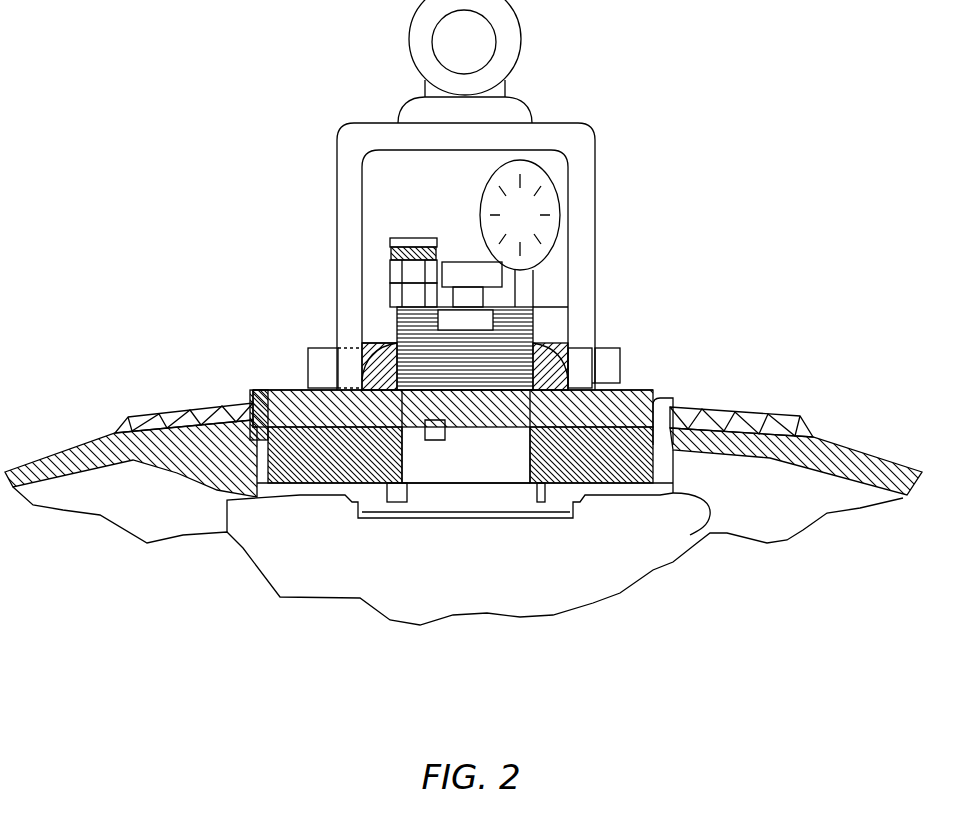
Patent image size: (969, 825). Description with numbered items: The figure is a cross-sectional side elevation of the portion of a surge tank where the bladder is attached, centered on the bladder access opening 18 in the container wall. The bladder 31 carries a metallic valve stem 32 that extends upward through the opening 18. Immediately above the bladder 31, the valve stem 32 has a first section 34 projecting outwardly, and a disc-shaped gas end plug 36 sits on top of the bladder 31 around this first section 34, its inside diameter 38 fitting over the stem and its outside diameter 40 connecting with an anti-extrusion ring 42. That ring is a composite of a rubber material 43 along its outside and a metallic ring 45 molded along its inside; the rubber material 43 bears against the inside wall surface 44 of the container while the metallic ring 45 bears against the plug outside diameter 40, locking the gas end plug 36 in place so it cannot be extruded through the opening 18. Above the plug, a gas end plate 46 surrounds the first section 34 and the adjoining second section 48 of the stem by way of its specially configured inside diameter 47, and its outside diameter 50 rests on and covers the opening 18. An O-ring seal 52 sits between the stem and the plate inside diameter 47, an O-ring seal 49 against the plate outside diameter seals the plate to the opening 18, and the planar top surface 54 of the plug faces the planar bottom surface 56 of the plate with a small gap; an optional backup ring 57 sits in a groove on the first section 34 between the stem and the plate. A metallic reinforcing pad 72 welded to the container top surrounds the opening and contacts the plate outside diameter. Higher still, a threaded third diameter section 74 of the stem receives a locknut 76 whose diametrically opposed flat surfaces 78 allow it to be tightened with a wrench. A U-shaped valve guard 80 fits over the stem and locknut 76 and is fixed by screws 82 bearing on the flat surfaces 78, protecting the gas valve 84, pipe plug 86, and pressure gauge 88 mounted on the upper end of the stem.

The bladder access opening 18 is at (295, 400).
The bladder 31 is at (623, 560).
The valve stem 32 is at (437, 452).
The first section 34 is at (465, 463).
The gas end plug 36 is at (300, 495).
The inside diameter 38 is at (407, 513).
The outside diameter 40 is at (235, 478).
The anti-extrusion ring 42 is at (718, 468).
The rubber material 43 is at (740, 460).
The inside wall surface 44 is at (757, 453).
The metallic ring 45 is at (680, 497).
The gas end plate 46 is at (662, 408).
The inside diameter 47 is at (440, 440).
The second section 48 is at (533, 340).
The O-ring seal 49 is at (650, 393).
The outside diameter 50 is at (250, 397).
The O-ring seal 52 is at (587, 483).
The planar top surface 54 is at (305, 400).
The planar bottom surface 56 is at (360, 380).
The backup ring 57 is at (623, 377).
The reinforcing pad 72 is at (173, 420).
The third diameter section 74 is at (533, 308).
The locknut 76 is at (400, 347).
The flat surfaces 78 is at (622, 348).
The valve guard 80 is at (583, 176).
The screws 82 is at (620, 363).
The gas valve 84 is at (403, 236).
The pipe plug 86 is at (470, 262).
The pressure gauge 88 is at (540, 172).